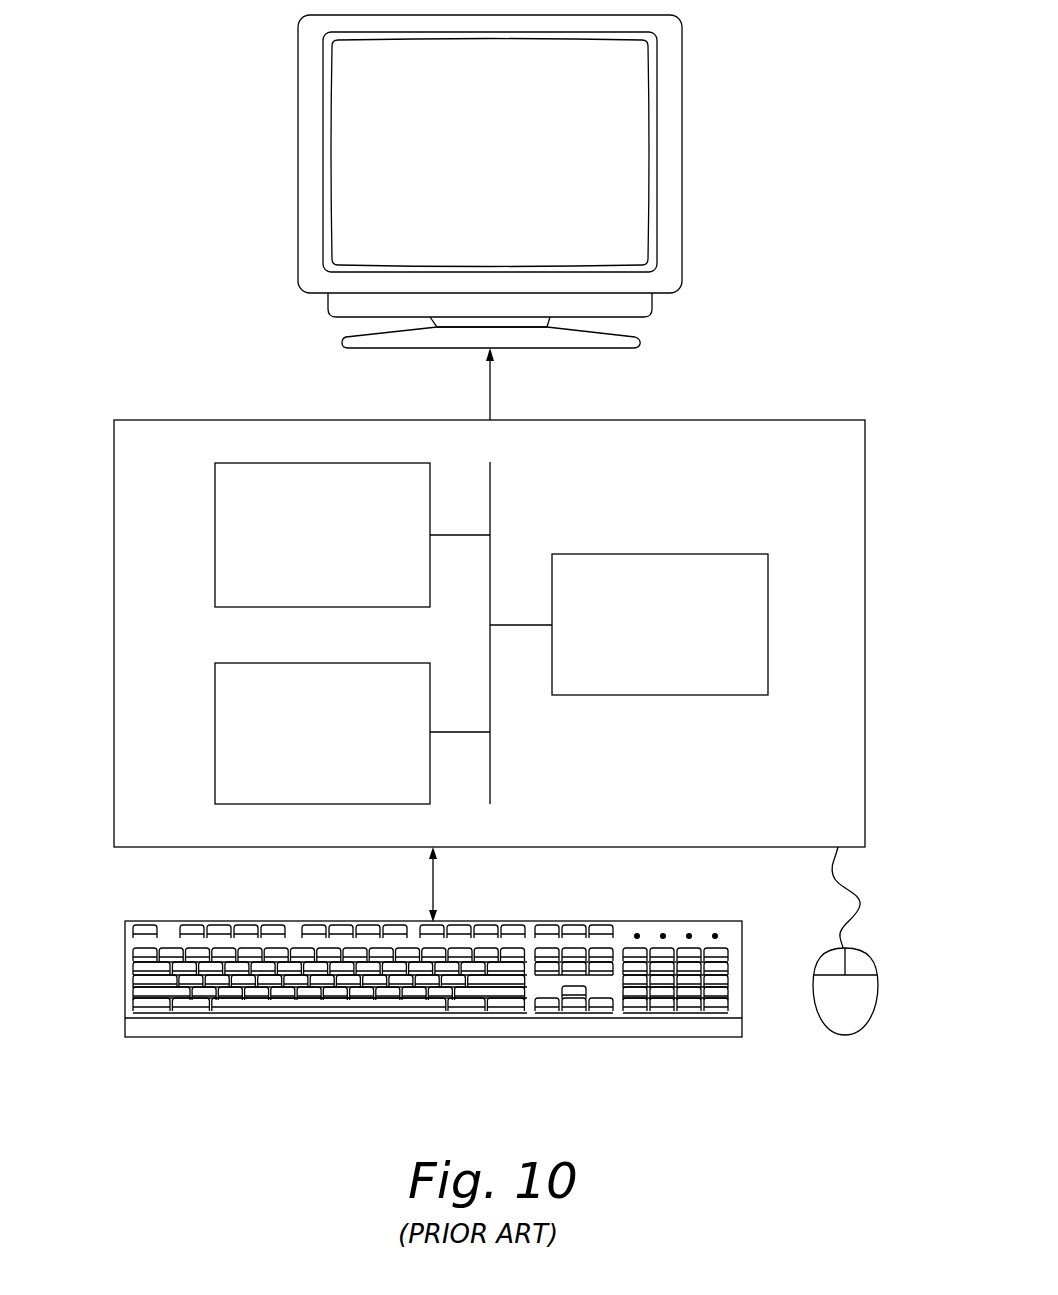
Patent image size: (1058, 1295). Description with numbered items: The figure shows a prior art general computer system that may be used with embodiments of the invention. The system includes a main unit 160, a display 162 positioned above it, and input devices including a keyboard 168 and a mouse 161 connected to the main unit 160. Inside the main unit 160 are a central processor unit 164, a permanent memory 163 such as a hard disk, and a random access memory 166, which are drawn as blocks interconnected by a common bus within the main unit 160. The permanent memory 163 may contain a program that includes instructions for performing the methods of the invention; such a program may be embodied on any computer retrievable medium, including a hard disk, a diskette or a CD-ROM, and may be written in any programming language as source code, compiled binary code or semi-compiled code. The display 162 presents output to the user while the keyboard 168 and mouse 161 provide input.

The main unit 160 is at (155, 340).
The mouse 161 is at (878, 985).
The display 162 is at (682, 141).
The permanent memory 163 is at (768, 625).
The central processor unit 164 is at (215, 529).
The random access memory 166 is at (215, 736).
The keyboard 168 is at (125, 973).